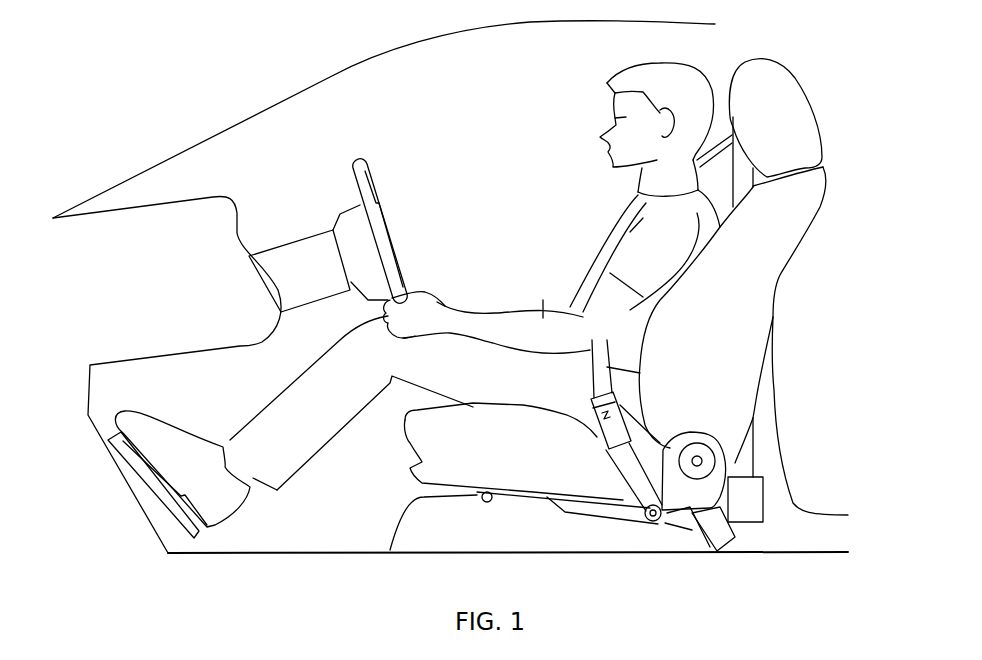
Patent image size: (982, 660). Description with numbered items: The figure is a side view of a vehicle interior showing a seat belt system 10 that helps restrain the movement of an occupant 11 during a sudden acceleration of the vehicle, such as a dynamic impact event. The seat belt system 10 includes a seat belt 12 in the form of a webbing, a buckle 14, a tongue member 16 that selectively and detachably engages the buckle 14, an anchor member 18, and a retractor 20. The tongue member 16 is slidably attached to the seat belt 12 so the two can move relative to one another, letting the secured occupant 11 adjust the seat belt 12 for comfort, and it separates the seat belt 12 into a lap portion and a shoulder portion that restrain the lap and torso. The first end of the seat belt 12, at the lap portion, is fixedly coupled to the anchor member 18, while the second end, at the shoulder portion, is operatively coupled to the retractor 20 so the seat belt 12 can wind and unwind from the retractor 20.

The seat belt system 10 is at (158, 80).
The occupant 11 is at (545, 320).
The seat belt 12 is at (748, 465).
The buckle 14 is at (611, 437).
The tongue member 16 is at (596, 413).
The anchor member 18 is at (720, 538).
The retractor 20 is at (752, 498).